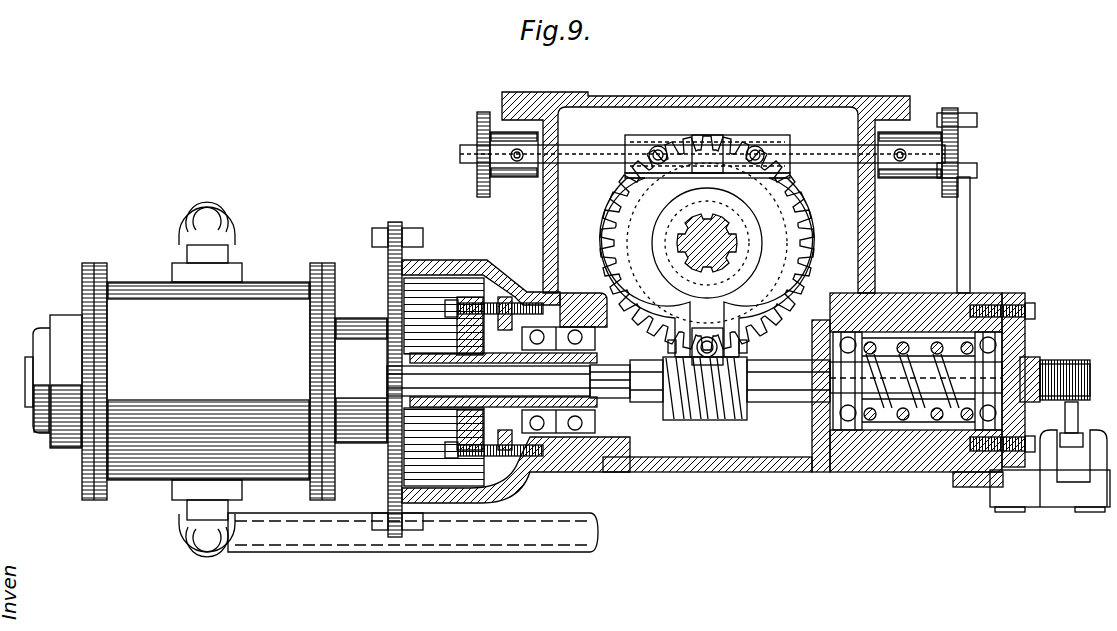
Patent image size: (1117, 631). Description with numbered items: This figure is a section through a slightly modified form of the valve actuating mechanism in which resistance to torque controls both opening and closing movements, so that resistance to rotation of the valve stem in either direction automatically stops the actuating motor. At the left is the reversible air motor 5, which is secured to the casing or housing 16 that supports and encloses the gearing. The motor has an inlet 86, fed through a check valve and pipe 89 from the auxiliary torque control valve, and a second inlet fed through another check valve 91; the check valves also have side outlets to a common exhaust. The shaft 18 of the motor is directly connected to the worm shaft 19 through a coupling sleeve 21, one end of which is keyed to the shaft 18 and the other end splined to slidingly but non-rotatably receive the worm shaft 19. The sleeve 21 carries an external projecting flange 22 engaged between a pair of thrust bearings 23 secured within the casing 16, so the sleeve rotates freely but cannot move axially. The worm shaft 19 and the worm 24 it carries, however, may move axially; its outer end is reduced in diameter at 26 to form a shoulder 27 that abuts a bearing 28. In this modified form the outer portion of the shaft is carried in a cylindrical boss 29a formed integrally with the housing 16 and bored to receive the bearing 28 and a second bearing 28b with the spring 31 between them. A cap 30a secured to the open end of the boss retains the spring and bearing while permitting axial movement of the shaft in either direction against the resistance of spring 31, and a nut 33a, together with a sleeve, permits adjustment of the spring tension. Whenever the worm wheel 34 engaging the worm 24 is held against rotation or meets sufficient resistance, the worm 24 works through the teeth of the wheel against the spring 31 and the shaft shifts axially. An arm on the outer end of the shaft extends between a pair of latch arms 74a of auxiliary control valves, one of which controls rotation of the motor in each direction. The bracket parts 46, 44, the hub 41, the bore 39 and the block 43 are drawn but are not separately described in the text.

The motor 5 is at (133, 282).
The check valve 91 is at (230, 218).
The inlet 86 is at (197, 556).
The pipe 89 is at (302, 557).
The casing or housing 16 is at (447, 262).
The shaft of the motor 18 is at (422, 410).
The coupling sleeve 21 is at (600, 408).
The external projecting flange 22 is at (566, 330).
The thrust bearings 23 is at (550, 310).
The worm shaft 19 is at (612, 364).
The worm 24 is at (710, 421).
The shoulder 27 is at (830, 373).
The bearing 28 is at (843, 432).
The bearing 28b is at (985, 433).
The reduced portion of the worm shaft 26 is at (878, 427).
The spring 31 is at (930, 430).
The cap 30a is at (1026, 333).
The nut 33a is at (1041, 362).
The latch arms 74a is at (1103, 445).
The cylindrical boss 29a is at (915, 292).
The cross bar 46 is at (772, 135).
The yoke straps 44 is at (625, 180).
The worm wheel 34 is at (800, 212).
The gear hub 41 is at (722, 232).
The splined bore 39 is at (750, 234).
The clamp block 43 is at (712, 338).